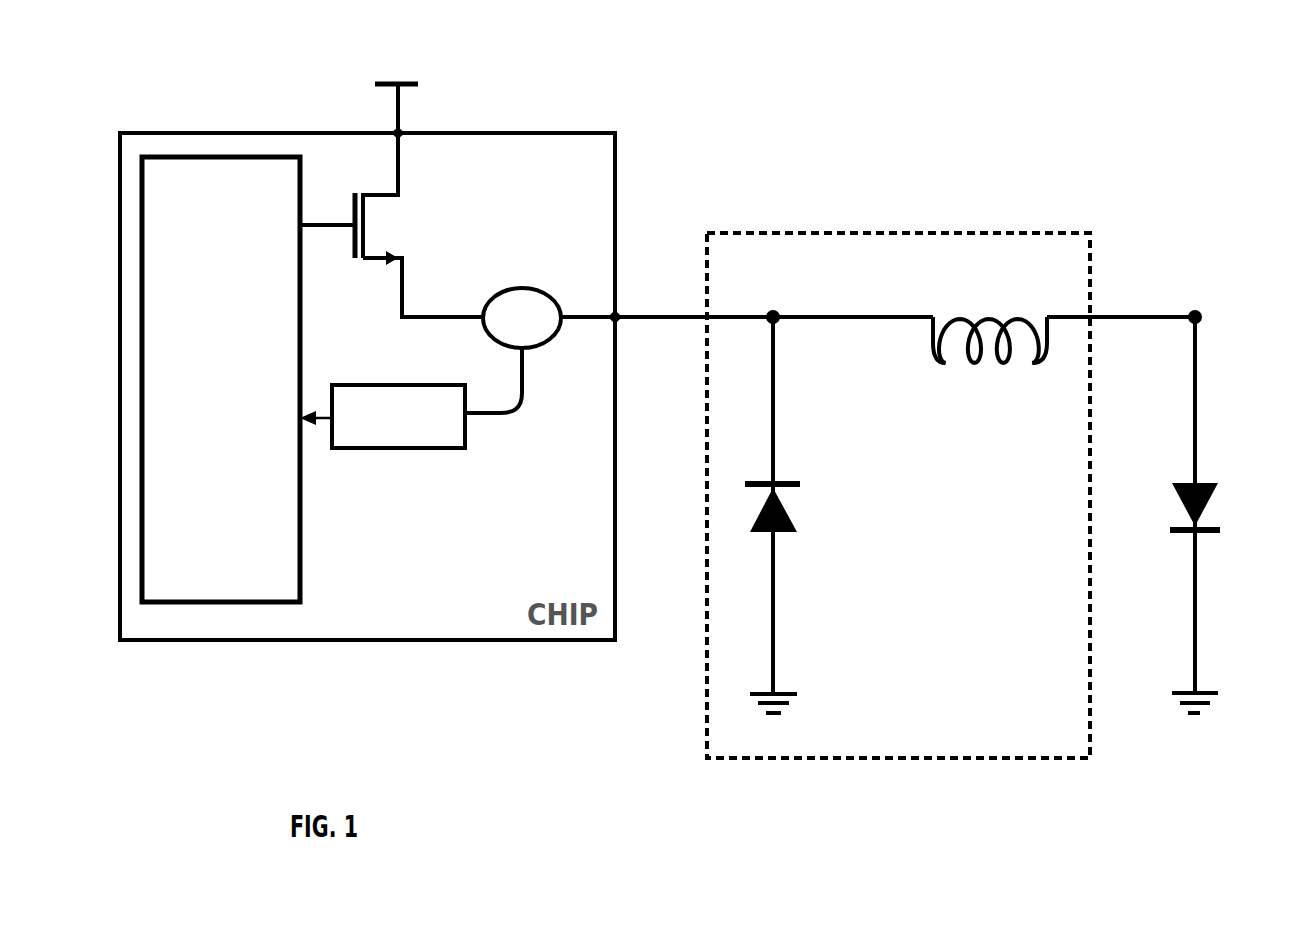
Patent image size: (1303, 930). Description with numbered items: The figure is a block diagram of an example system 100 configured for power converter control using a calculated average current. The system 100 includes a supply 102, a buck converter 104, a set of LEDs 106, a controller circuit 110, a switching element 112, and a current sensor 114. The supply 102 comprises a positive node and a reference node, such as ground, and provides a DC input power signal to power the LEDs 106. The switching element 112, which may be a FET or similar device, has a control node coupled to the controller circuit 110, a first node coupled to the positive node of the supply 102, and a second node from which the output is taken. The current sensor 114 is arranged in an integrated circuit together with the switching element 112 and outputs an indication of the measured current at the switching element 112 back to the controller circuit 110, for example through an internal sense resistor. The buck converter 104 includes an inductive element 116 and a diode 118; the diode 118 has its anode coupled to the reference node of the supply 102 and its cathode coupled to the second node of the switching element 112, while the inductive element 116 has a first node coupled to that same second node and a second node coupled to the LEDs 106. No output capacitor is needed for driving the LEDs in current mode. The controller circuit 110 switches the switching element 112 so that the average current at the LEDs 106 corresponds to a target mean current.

The system 100 is at (1208, 66).
The supply 102 is at (401, 82).
The buck converter 104 is at (965, 233).
The LEDs 106 is at (1200, 481).
The controller circuit 110 is at (207, 416).
The switching element 112 is at (368, 229).
The current sensor 114 is at (510, 288).
The inductive element 116 is at (1020, 317).
The diode 118 is at (786, 481).